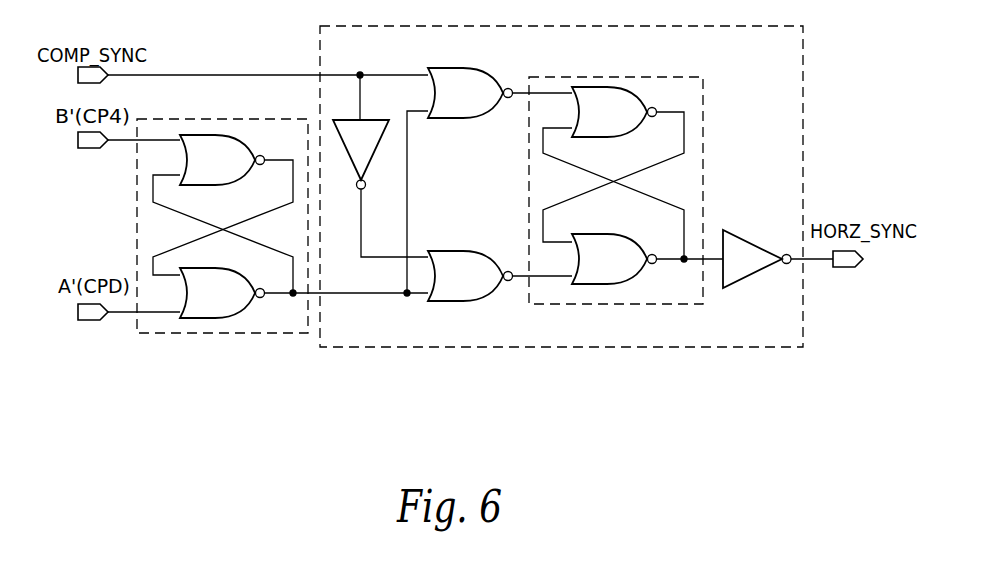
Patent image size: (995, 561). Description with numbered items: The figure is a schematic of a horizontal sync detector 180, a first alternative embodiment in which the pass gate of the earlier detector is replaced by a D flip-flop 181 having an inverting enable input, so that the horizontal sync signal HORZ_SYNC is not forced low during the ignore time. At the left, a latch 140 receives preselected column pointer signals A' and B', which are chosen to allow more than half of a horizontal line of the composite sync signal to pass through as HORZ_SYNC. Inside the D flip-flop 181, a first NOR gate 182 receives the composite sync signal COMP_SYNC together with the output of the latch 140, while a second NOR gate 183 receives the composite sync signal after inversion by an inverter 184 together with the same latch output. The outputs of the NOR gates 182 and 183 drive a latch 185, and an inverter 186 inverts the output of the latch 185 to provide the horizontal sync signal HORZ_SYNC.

The latch 140 is at (233, 333).
The horizontal sync detector 180 is at (623, 383).
The D flip-flop 181 is at (705, 347).
The first NOR gate 182 is at (470, 73).
The second NOR gate 183 is at (454, 296).
The inverter 184 is at (372, 150).
The latch 185 is at (672, 304).
The inverter 186 is at (750, 247).